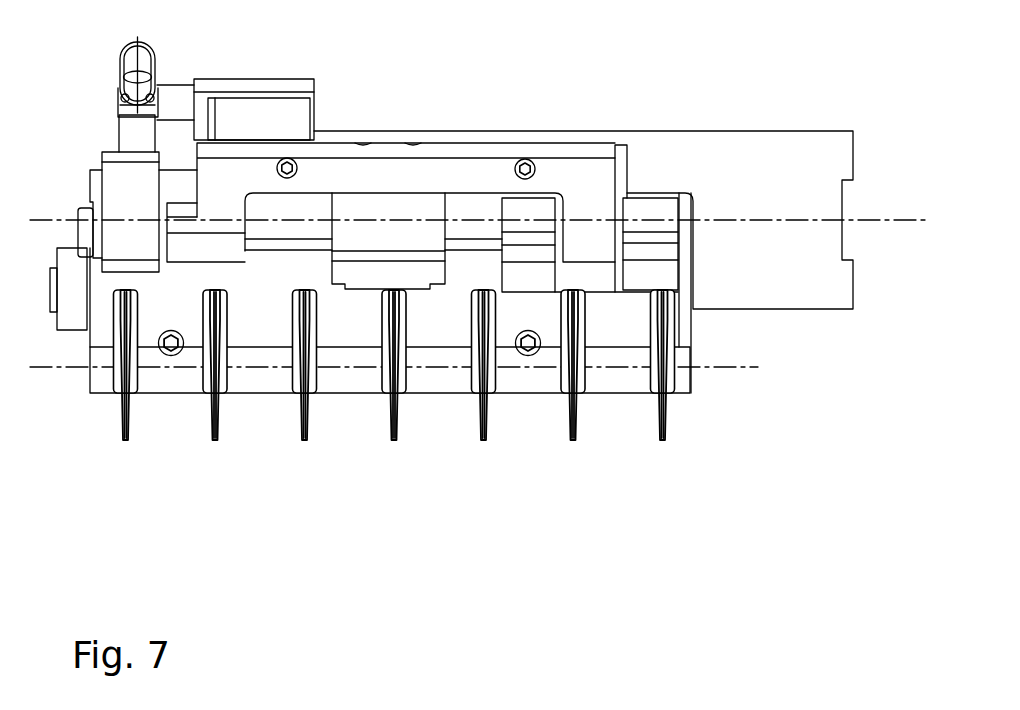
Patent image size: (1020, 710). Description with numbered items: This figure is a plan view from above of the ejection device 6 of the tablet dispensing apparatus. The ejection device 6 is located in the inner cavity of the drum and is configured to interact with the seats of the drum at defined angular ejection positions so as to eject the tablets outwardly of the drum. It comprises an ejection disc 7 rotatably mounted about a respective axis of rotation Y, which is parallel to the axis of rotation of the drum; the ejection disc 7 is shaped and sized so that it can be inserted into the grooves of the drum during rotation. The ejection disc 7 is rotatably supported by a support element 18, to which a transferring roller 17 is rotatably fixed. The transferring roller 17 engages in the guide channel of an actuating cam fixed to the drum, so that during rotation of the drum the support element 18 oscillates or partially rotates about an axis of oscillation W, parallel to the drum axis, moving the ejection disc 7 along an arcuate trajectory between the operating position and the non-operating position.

The ejection device 6 is at (745, 90).
The ejection disc 7 is at (217, 442).
The transferring roller 17 is at (72, 313).
The support element 18 is at (440, 325).
The axis of oscillation W is at (906, 220).
The axis of rotation Y is at (743, 367).